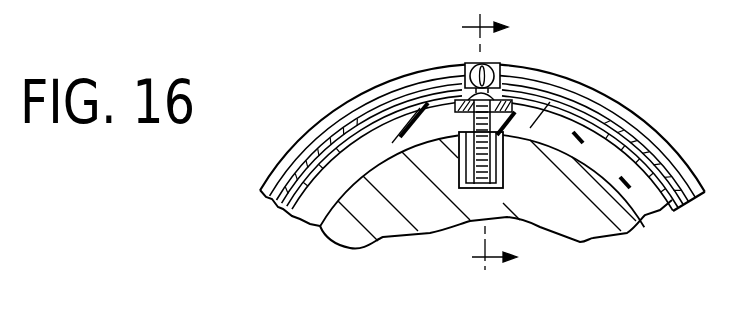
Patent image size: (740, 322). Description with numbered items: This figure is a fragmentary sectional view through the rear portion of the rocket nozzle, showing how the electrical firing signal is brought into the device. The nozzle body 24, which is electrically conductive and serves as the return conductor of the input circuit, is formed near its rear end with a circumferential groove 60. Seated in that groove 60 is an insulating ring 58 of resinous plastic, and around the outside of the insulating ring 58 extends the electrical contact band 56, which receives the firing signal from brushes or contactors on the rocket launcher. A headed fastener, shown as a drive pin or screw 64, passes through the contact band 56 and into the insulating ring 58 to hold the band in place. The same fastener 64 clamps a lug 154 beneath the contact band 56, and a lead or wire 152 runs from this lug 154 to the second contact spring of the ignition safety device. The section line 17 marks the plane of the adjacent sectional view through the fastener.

The section line 17- 17 is at (477, 151).
The nozzle body 24 is at (357, 229).
The electrical contact band 56 is at (536, 108).
The insulating ring 58 is at (647, 203).
The circumferential groove 60 is at (603, 137).
The drive pin or screw 64 is at (504, 158).
The lead or wire 152 is at (486, 78).
The lug 154 is at (456, 140).